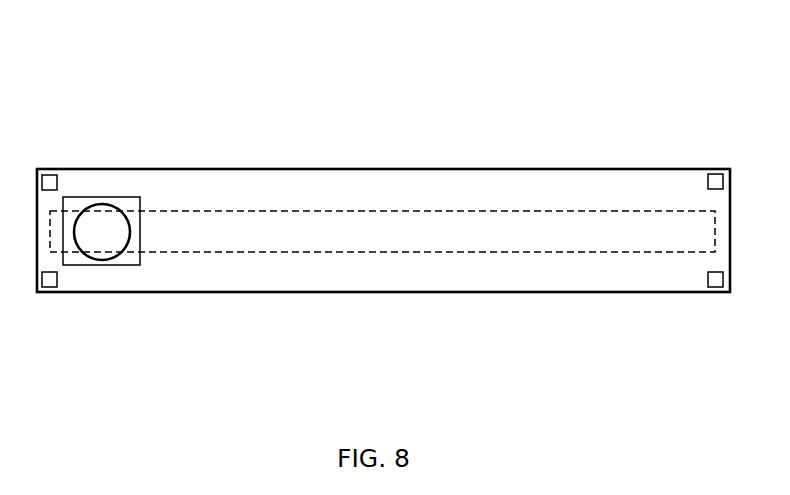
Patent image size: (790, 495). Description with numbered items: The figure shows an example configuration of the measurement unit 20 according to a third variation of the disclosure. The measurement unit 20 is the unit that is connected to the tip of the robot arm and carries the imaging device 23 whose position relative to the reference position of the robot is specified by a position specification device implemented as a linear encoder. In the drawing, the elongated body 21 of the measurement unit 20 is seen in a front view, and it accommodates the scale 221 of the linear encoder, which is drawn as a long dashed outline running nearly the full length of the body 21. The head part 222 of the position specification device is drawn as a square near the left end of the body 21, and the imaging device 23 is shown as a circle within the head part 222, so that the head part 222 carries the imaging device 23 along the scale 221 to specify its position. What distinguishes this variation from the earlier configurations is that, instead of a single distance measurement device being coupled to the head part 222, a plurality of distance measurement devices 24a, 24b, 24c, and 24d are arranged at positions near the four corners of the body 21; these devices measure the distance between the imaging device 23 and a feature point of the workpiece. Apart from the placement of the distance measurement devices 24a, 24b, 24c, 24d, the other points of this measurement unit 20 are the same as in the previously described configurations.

The measurement unit 20 is at (125, 99).
The body 21 is at (646, 168).
The scale 221 is at (550, 210).
The head part 222 is at (133, 265).
The imaging device 23 is at (121, 214).
The distance measurement device 24a is at (48, 175).
The distance measurement device 24b is at (715, 174).
The distance measurement device 24c is at (715, 288).
The distance measurement device 24d is at (48, 288).